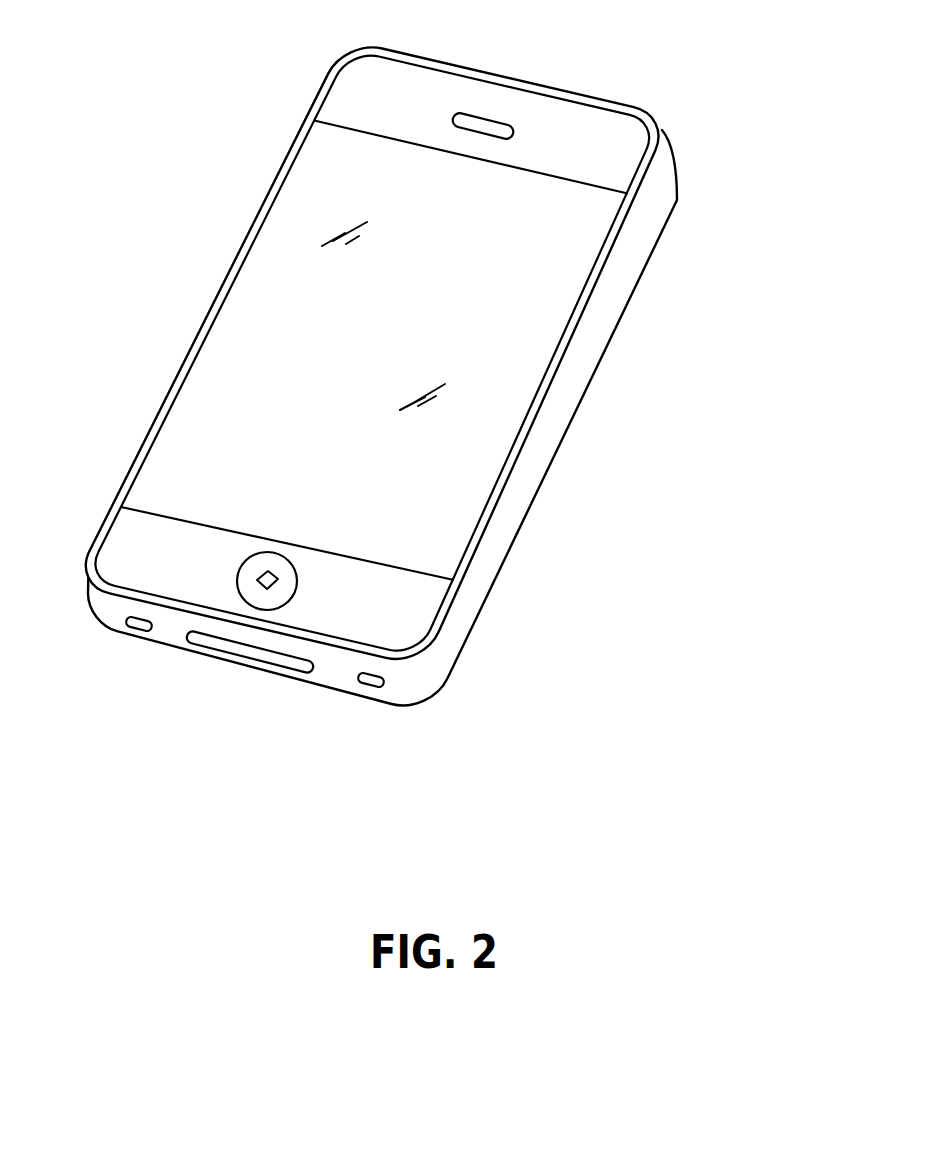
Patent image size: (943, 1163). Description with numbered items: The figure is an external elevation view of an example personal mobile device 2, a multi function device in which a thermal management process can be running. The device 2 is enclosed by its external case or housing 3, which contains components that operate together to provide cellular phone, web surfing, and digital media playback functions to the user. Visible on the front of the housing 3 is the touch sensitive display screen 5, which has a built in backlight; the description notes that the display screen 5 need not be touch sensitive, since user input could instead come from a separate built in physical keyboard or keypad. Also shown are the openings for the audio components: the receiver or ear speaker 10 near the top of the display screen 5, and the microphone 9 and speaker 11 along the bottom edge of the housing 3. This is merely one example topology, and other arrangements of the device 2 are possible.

The personal mobile device 2 is at (700, 68).
The housing 3 is at (540, 463).
The touch sensitive display screen 5 is at (592, 260).
The microphone 9 is at (142, 631).
The receiver 10 is at (472, 117).
The speaker 11 is at (375, 688).